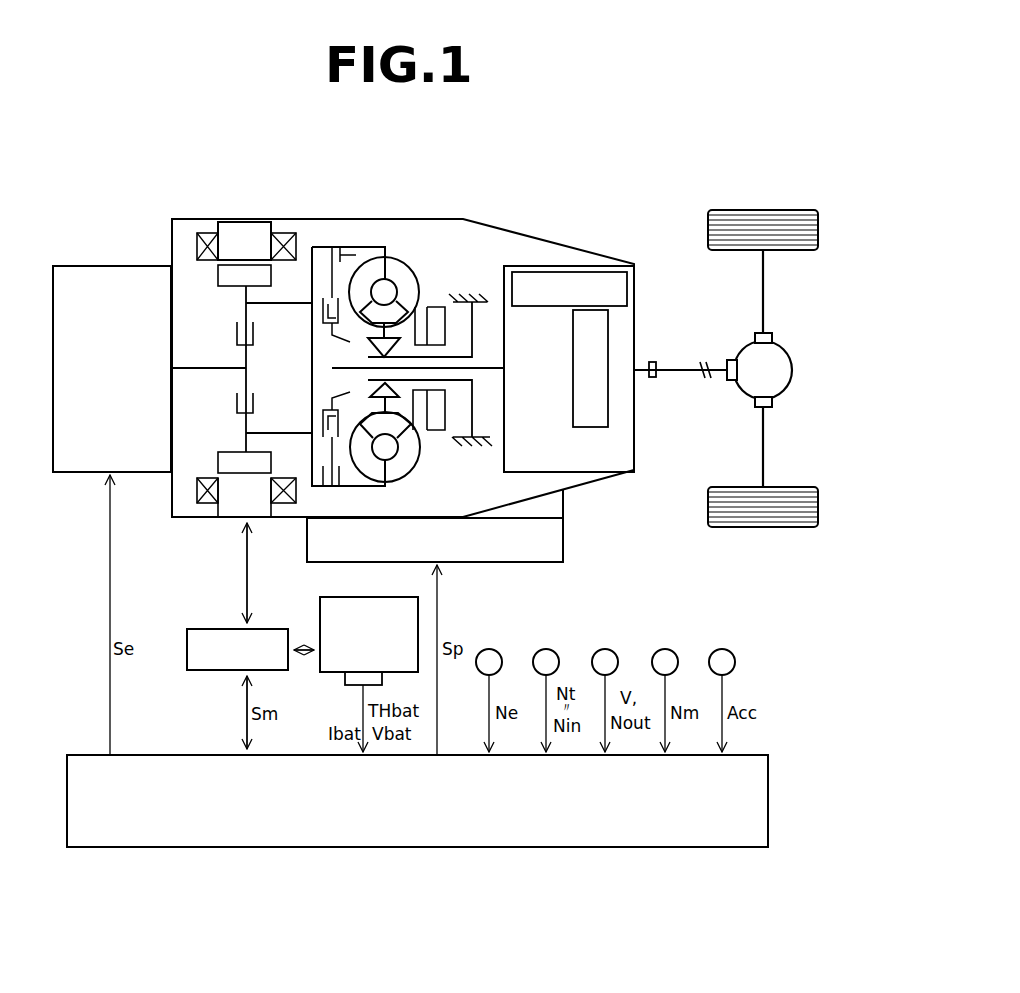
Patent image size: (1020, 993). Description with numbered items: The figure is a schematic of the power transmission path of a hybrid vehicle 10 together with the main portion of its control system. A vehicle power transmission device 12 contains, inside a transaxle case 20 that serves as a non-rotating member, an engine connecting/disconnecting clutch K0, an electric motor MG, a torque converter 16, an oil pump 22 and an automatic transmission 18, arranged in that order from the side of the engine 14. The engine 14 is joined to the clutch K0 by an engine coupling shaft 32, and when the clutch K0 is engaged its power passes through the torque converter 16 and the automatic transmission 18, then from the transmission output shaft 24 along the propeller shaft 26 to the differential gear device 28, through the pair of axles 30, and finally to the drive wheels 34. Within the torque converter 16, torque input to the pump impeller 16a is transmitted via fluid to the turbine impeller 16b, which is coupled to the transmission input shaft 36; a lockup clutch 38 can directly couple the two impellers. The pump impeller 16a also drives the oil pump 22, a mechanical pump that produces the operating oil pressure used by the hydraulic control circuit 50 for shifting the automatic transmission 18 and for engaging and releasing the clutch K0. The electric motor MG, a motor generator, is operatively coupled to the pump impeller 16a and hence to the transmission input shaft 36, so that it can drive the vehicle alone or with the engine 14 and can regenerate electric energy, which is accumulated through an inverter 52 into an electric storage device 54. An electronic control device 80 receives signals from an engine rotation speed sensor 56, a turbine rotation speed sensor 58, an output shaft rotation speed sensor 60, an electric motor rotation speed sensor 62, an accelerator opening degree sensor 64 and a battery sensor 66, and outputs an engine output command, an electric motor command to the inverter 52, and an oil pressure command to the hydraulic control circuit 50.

The hybrid vehicle 10 is at (575, 128).
The vehicle power transmission device 12 is at (403, 323).
The engine 14 is at (77, 268).
The torque converter 16 is at (392, 349).
The pump impeller 16a is at (403, 461).
The turbine impeller 16b is at (362, 462).
The automatic transmission 18 is at (634, 316).
The transaxle case 20 is at (412, 218).
The oil pump 22 is at (437, 420).
The transmission output shaft 24 is at (643, 366).
The propeller shaft 26 is at (680, 377).
The differential gear device 28 is at (777, 355).
The axles 30 is at (763, 292).
The engine coupling shaft 32 is at (205, 368).
The drive wheels 34 is at (713, 230).
The transmission input shaft 36 is at (492, 375).
The lockup clutch 38 is at (350, 250).
The hydraulic control circuit 50 is at (563, 525).
The inverter 52 is at (192, 665).
The electric storage device 54 is at (332, 600).
The engine rotation speed sensor 56 is at (492, 650).
The turbine rotation speed sensor 58 is at (549, 650).
The output shaft rotation speed sensor 60 is at (608, 650).
The electric motor rotation speed sensor 62 is at (668, 650).
The accelerator opening degree sensor 64 is at (725, 650).
The battery sensor 66 is at (343, 678).
The electronic control device 80 is at (751, 767).
The electric motor MG is at (254, 369).
The engine connecting/disconnecting clutch K0 is at (251, 403).